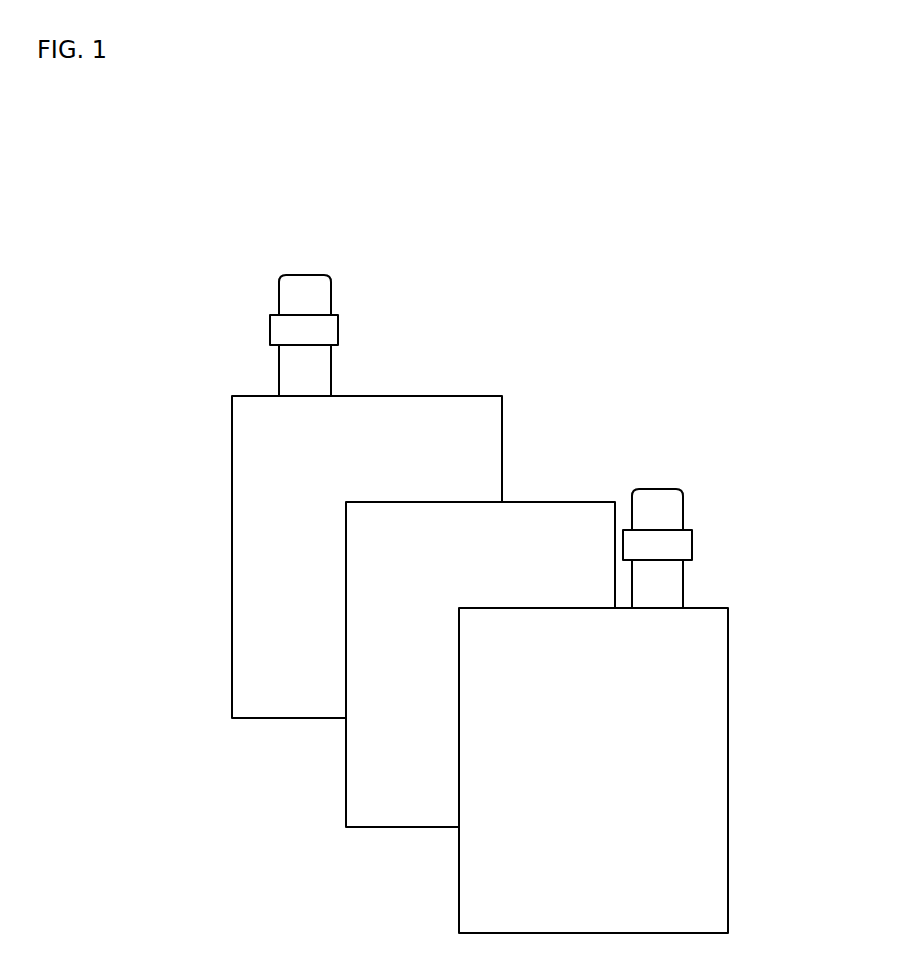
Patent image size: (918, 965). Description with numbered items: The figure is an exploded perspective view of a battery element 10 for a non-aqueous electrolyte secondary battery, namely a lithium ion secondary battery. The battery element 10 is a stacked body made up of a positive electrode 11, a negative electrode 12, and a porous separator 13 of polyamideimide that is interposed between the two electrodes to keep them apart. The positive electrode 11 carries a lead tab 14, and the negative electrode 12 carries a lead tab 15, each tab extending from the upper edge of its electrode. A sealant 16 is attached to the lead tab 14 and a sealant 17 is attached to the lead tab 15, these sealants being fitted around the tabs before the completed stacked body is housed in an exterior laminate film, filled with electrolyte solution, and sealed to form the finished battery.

The battery element 10 is at (681, 253).
The positive electrode 11 is at (212, 517).
The negative electrode 12 is at (752, 767).
The separator 13 is at (563, 500).
The lead tab 14 is at (278, 297).
The lead tab 15 is at (683, 505).
The sealant 16 is at (338, 328).
The sealant 17 is at (692, 545).